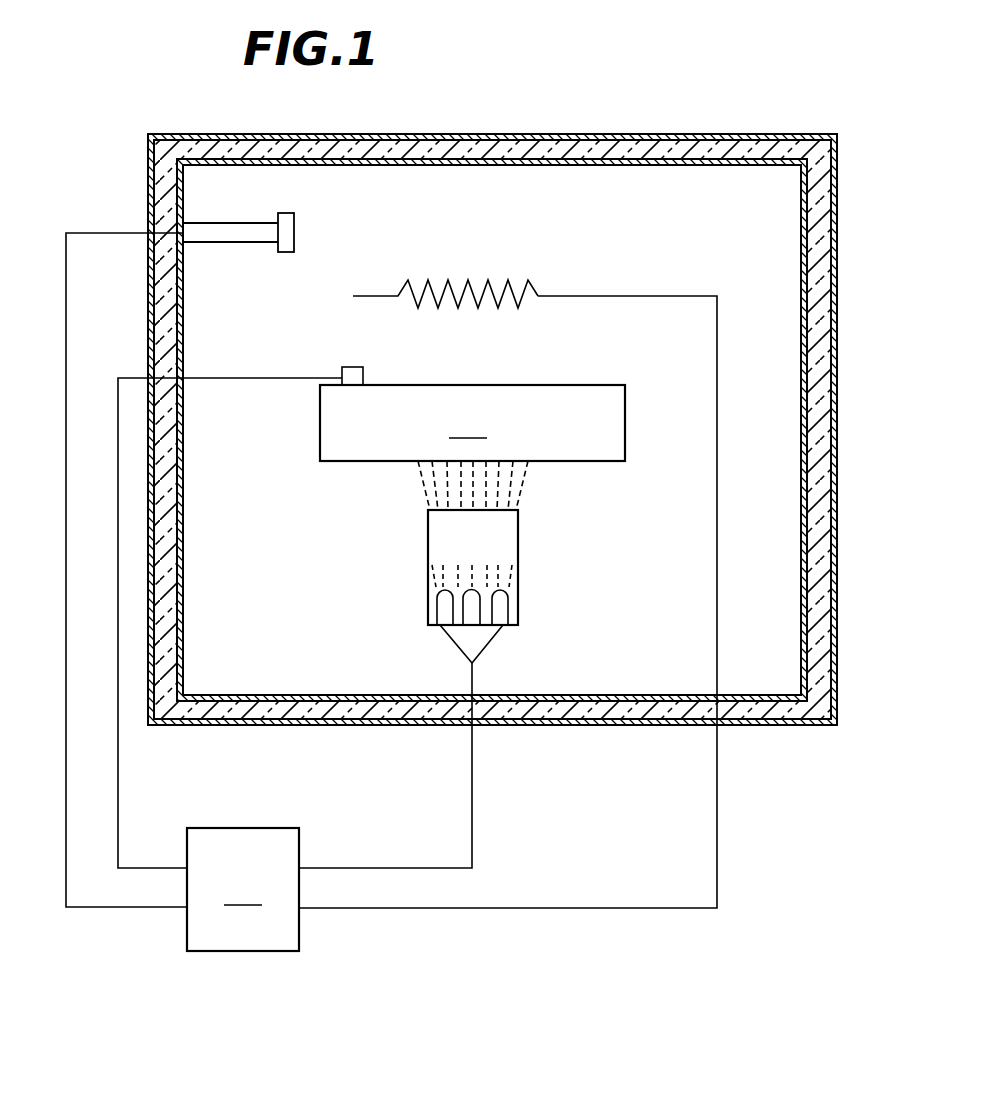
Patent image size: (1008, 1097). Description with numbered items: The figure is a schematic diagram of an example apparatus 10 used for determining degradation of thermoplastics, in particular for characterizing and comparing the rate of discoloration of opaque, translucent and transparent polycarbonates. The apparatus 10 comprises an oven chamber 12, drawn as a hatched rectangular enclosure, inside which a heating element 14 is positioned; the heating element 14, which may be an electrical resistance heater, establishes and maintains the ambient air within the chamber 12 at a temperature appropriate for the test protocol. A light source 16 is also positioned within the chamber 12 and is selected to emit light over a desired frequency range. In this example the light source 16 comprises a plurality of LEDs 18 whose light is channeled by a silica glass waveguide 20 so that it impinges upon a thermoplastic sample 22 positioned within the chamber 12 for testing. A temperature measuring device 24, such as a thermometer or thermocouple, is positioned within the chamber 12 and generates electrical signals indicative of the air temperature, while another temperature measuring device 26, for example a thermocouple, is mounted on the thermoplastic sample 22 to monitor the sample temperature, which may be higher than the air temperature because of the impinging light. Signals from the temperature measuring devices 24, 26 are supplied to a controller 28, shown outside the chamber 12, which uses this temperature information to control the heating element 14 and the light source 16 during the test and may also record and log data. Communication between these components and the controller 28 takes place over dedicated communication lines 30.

The apparatus 10 is at (623, 80).
The oven chamber 12 is at (773, 235).
The heating element 14 is at (478, 280).
The light source 16 is at (520, 547).
The LEDs 18 is at (443, 612).
The silica glass waveguide 20 is at (438, 545).
The thermoplastic sample 22 is at (472, 423).
The temperature measuring device 24 is at (260, 233).
The temperature measuring device 26 is at (346, 367).
The controller 28 is at (243, 889).
The communication lines 30 is at (118, 772).